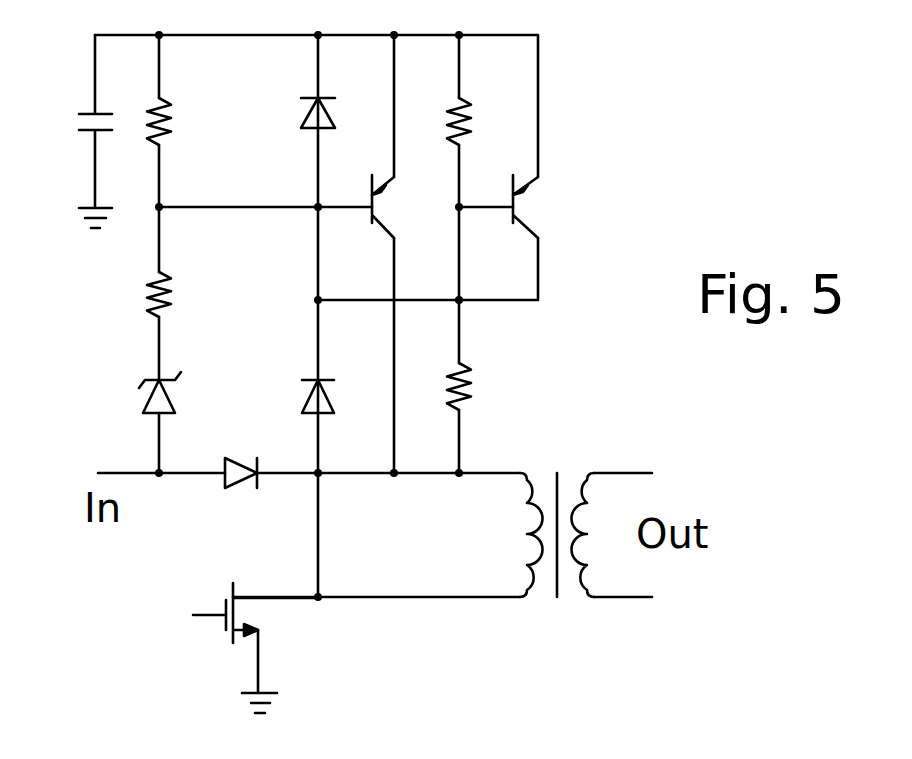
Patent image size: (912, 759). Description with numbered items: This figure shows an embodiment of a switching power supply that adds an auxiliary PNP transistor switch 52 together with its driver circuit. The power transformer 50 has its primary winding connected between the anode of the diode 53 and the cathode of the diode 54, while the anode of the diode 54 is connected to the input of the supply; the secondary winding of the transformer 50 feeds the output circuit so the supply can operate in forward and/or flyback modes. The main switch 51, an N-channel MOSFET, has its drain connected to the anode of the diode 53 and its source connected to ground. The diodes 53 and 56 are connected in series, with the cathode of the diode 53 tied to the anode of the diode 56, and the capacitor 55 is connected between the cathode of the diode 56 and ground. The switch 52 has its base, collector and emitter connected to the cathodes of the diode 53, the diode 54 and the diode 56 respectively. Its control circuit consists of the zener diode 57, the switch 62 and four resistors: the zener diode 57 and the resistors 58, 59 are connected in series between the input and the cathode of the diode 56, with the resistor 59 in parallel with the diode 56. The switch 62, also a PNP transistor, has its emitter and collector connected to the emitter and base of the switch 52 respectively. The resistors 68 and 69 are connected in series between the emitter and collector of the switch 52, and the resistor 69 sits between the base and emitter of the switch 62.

The power transformer 50 is at (557, 473).
The main switch 51 is at (233, 640).
The auxiliary switch 52 is at (372, 232).
The diode 53 is at (311, 378).
The diode 54 is at (229, 489).
The capacitor 55 is at (88, 132).
The diode 56 is at (310, 128).
The zener diode 57 is at (153, 378).
The resistor 58 is at (164, 307).
The resistor 59 is at (165, 132).
The switch 62 is at (513, 232).
The resistor 68 is at (467, 397).
The resistor 69 is at (455, 142).